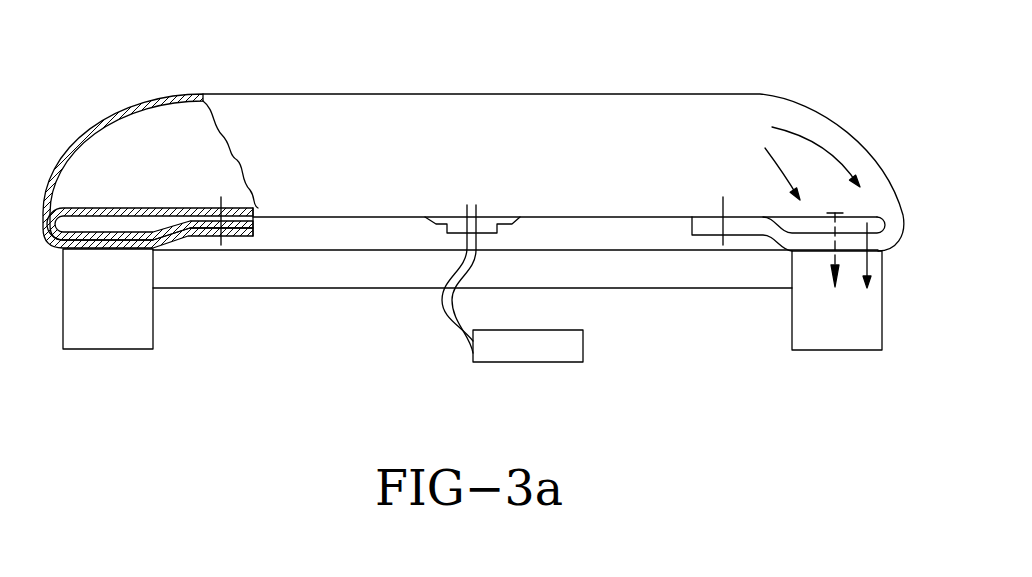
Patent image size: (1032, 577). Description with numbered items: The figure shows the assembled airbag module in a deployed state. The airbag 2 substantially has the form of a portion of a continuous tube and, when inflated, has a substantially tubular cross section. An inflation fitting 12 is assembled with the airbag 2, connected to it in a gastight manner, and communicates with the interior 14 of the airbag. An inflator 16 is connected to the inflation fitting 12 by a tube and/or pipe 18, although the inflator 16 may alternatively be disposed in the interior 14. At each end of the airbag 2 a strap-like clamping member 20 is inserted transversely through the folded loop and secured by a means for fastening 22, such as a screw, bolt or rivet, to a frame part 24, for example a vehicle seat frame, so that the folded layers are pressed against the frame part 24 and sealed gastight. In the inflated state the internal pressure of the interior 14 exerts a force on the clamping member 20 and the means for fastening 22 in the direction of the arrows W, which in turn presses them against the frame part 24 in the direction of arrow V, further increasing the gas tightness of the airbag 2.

The airbag 2 is at (527, 115).
The inflation fitting 12 is at (505, 218).
The interior of the airbag 14 is at (198, 170).
The inflator 16 is at (530, 350).
The tube and/or pipe 18 is at (448, 303).
The clamping member 20 is at (85, 227).
The means for fastening 22 is at (833, 267).
The frame part 24 is at (138, 300).